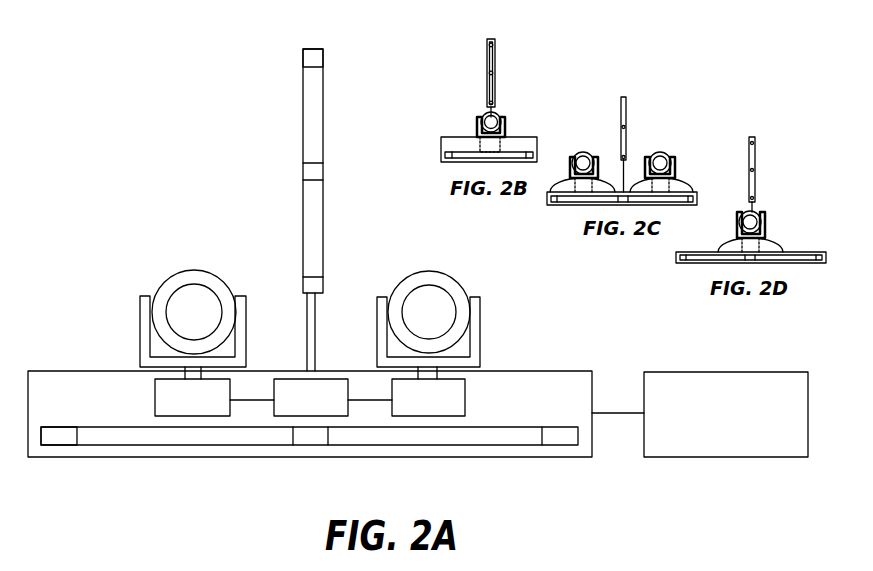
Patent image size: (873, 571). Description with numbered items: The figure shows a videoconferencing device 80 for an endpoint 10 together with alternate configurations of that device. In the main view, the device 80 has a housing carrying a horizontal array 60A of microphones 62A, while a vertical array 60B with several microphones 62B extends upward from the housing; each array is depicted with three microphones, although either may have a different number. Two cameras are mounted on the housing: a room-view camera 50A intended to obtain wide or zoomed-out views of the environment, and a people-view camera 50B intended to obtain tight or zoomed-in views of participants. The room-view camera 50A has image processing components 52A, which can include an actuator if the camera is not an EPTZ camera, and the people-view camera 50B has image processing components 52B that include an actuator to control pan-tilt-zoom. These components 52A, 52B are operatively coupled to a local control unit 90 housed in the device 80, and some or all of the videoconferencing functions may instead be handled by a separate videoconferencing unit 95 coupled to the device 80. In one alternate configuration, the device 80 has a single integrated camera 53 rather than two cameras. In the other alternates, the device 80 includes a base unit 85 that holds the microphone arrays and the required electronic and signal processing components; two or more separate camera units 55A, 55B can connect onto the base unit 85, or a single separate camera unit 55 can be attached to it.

In FIG. 2A, the videoconferencing endpoint 10 is at (124, 156).
In FIG. 2A, the room-view camera 50A is at (186, 247).
In FIG. 2A, the people-view camera 50B is at (413, 260).
In FIG. 2A, the image processing components 52A is at (212, 417).
In FIG. 2A, the image processing components 52B is at (452, 417).
In FIG. 2B, the integrated camera 53 is at (479, 116).
In FIG. 2D, the camera unit 55 is at (766, 228).
In FIG. 2C, the camera unit 55A is at (582, 152).
In FIG. 2C, the camera unit 55B is at (664, 155).
In FIG. 2A, the horizontal array 60A is at (135, 447).
In FIG. 2B, the horizontal array 60A is at (441, 148).
In FIG. 2A, the vertical array 60B is at (303, 138).
In FIG. 2B, the vertical array 60B is at (487, 40).
In FIG. 2A, the microphones 62A is at (58, 447).
In FIG. 2A, the microphones 62B is at (303, 58).
In FIG. 2B, the videoconferencing device 80 is at (482, 88).
In FIG. 2C, the videoconferencing device 80 is at (632, 160).
In FIG. 2D, the videoconferencing device 80 is at (737, 214).
In FIG. 2C, the base unit 85 is at (553, 206).
In FIG. 2D, the base unit 85 is at (683, 265).
In FIG. 2A, the local control unit 90 is at (340, 417).
In FIG. 2A, the videoconferencing unit 95 is at (752, 457).